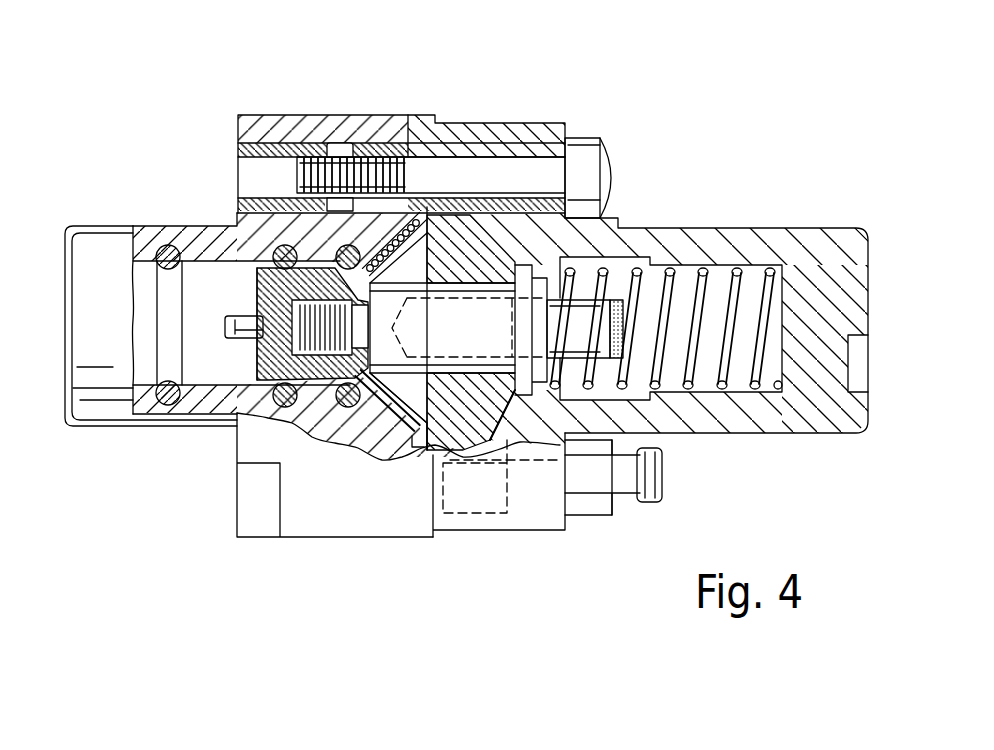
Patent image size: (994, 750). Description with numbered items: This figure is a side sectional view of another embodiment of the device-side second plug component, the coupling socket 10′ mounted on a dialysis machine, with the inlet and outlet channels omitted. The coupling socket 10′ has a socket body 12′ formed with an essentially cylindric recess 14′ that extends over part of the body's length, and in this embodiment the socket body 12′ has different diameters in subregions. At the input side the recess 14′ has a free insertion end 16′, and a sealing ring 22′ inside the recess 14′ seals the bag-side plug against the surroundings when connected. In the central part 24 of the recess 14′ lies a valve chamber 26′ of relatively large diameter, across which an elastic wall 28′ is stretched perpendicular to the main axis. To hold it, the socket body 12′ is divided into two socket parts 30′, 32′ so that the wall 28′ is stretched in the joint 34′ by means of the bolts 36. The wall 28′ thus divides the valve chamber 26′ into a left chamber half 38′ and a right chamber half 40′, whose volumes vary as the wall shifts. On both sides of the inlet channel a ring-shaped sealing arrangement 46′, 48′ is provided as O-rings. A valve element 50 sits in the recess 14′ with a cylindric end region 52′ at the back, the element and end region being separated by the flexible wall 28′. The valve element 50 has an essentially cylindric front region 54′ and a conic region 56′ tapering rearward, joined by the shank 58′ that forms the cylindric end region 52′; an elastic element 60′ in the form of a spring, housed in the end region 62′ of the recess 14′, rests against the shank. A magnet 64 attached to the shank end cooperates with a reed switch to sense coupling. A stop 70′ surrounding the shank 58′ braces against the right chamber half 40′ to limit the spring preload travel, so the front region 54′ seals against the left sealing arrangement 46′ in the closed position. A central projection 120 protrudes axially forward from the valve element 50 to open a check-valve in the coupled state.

The coupling socket 10′ is at (501, 255).
The socket body 12′ is at (500, 309).
The recess 14′ is at (216, 236).
The free insertion end 16′ is at (140, 282).
The sealing ring 22′ is at (164, 375).
The central part 24 is at (405, 413).
The valve chamber 26′ is at (471, 483).
The elastic wall 28′ is at (431, 120).
The socket part 30′ is at (103, 436).
The socket part 32′ is at (715, 451).
The joint 34′ is at (486, 130).
The bolts 36 is at (583, 155).
The left chamber half 38′ is at (435, 424).
The right chamber half 40′ is at (486, 512).
The ring-shaped sealing arrangement 46′ is at (273, 419).
The ring-shaped sealing arrangement 48′ is at (359, 419).
The valve element 50 is at (256, 268).
The cylindric end region 52′ is at (613, 258).
The cylindric front region 54′ is at (401, 155).
The conic region 56′ is at (312, 431).
The shank 58′ is at (458, 249).
The elastic element 60′ is at (666, 273).
The end region 62′ is at (849, 332).
The magnet 64 is at (618, 303).
The stop 70′ is at (499, 497).
The central projection 120 is at (232, 314).